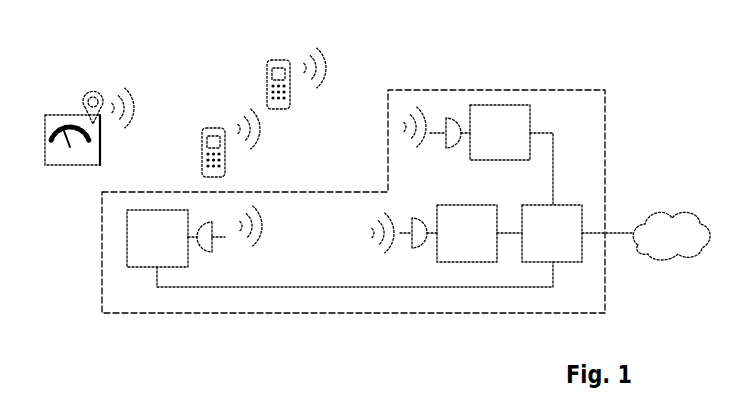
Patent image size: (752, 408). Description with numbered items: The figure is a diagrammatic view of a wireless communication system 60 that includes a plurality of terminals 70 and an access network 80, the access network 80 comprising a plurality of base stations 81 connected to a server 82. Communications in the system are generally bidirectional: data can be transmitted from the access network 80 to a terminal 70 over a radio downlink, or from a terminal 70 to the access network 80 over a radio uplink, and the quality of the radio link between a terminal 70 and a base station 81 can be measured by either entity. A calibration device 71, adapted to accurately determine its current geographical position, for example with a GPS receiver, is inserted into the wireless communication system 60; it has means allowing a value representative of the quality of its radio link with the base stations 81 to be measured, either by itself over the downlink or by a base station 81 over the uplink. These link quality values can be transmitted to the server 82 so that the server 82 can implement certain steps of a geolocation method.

The wireless communication system 60 is at (176, 57).
The terminal 70 is at (202, 158).
The calibration device 71 is at (57, 115).
The access network 80 is at (605, 115).
The base station 81 is at (470, 105).
The server 82 is at (568, 205).